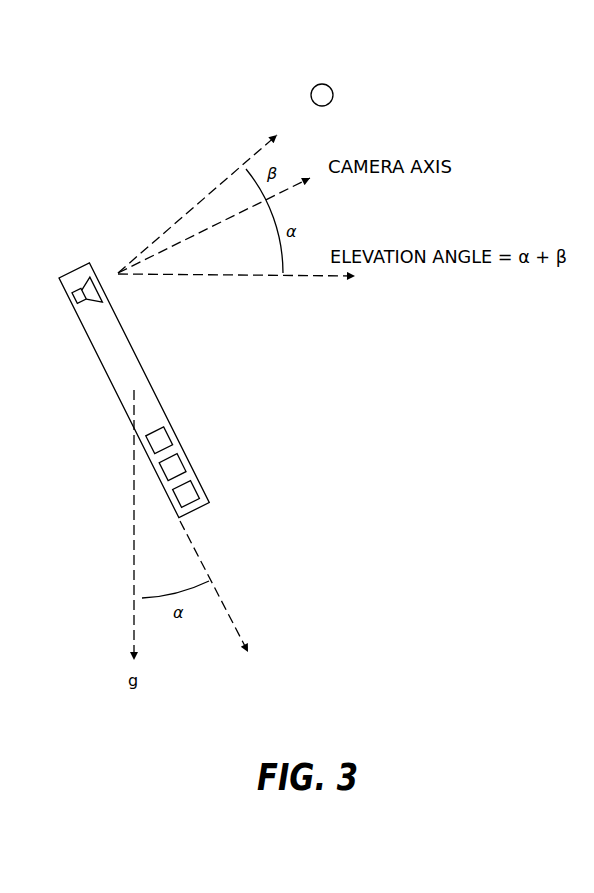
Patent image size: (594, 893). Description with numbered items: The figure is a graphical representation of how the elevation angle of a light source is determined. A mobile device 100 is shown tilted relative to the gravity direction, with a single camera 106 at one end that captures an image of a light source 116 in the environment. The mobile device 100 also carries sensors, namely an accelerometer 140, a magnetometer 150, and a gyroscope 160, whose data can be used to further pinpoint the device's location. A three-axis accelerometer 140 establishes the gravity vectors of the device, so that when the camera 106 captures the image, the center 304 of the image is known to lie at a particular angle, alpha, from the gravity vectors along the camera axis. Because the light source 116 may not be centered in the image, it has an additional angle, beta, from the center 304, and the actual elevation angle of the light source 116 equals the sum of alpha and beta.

The mobile device 100 is at (96, 352).
The camera 106 is at (86, 276).
The light source 116 is at (317, 88).
The accelerometer 140 is at (160, 445).
The magnetometer 150 is at (174, 472).
The gyroscope 160 is at (188, 499).
The center of the image 304 is at (290, 187).